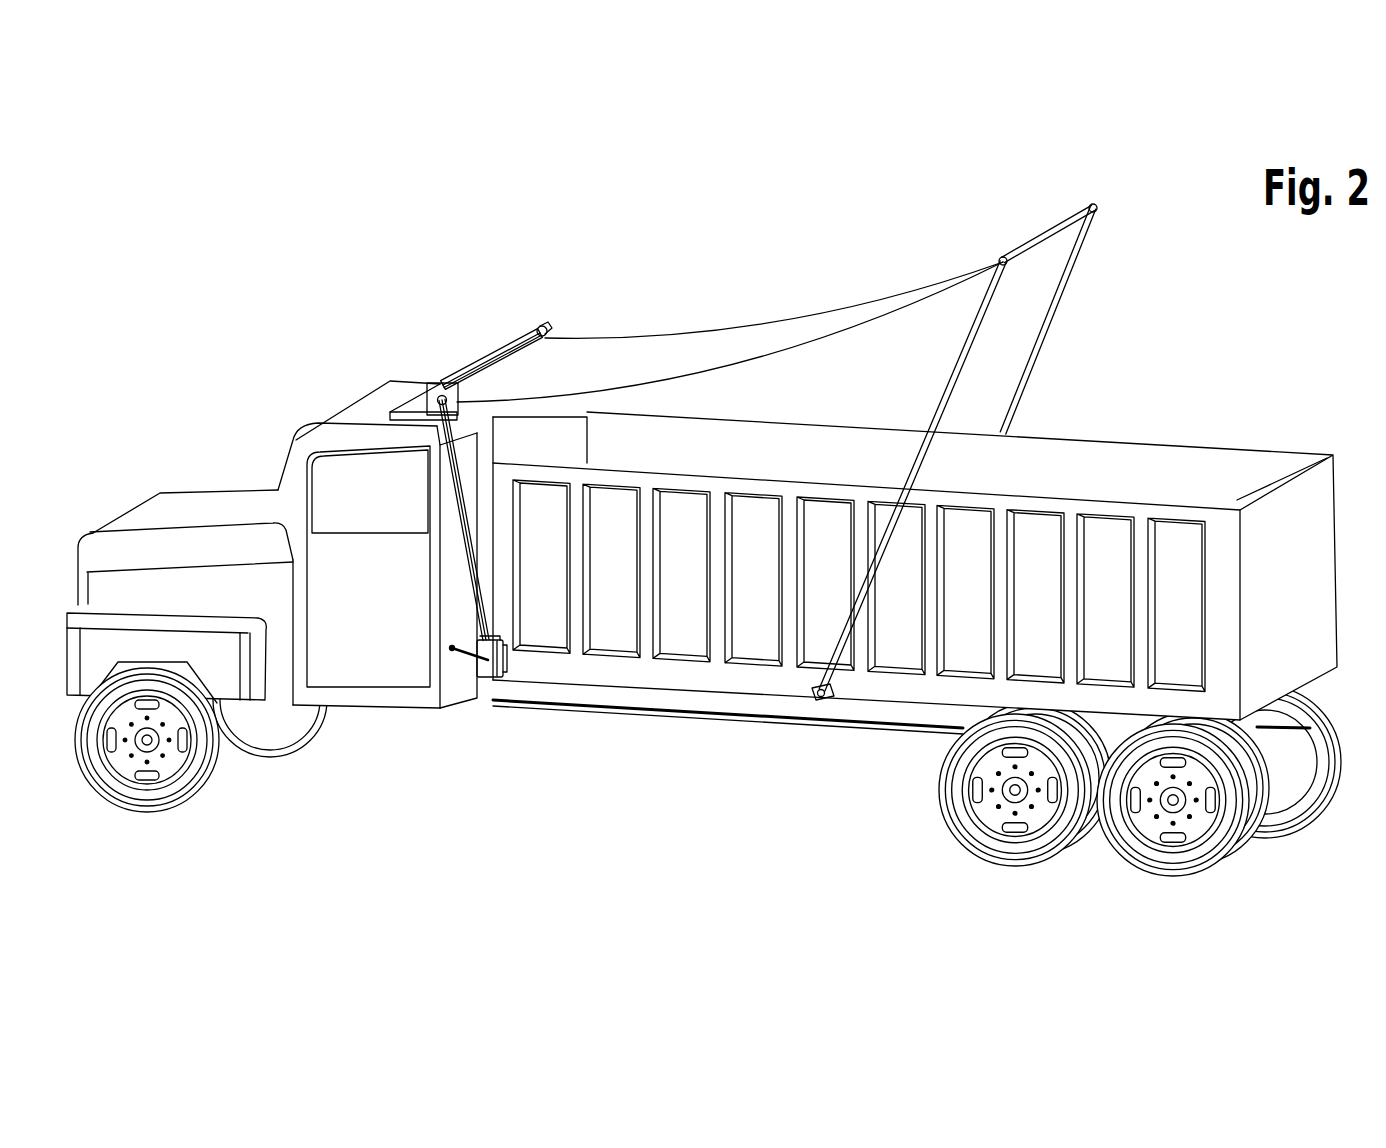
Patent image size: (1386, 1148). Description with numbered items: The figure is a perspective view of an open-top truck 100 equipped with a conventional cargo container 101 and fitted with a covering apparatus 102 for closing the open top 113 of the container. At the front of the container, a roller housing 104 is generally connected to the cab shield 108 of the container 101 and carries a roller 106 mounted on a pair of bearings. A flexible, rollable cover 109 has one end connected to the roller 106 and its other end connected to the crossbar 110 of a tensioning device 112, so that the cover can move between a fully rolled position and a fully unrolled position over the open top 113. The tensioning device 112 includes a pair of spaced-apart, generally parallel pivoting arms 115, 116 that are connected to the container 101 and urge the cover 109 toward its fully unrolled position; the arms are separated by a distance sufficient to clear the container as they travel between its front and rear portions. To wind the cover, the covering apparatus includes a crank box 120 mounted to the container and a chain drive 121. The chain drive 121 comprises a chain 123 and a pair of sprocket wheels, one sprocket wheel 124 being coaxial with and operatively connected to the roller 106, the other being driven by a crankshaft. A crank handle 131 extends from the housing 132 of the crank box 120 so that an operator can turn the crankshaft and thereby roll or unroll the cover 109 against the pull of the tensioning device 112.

The truck 100 is at (1125, 425).
The cargo container 101 is at (1210, 447).
The covering apparatus 102 is at (592, 315).
The roller housing 104 is at (540, 333).
The roller 106 is at (503, 343).
The cab shield 108 is at (400, 403).
The cover 109 is at (765, 337).
The crossbar 110 is at (1053, 222).
The tensioning device 112 is at (813, 732).
The open top 113 is at (840, 455).
The pivoting arm 115 is at (957, 350).
The pivoting arm 116 is at (1050, 332).
The crank box 120 is at (495, 682).
The chain drive 121 is at (483, 574).
The chain 123 is at (477, 577).
The sprocket wheel 124 is at (440, 393).
The crank handle 131 is at (473, 672).
The housing 132 is at (494, 680).